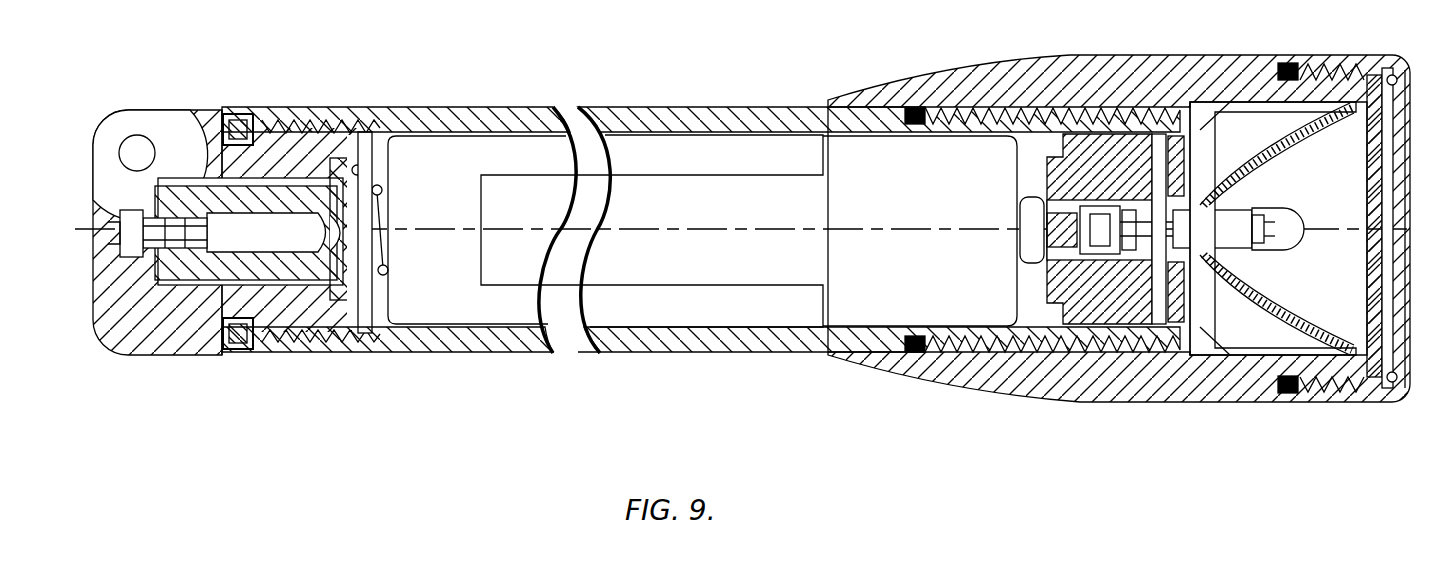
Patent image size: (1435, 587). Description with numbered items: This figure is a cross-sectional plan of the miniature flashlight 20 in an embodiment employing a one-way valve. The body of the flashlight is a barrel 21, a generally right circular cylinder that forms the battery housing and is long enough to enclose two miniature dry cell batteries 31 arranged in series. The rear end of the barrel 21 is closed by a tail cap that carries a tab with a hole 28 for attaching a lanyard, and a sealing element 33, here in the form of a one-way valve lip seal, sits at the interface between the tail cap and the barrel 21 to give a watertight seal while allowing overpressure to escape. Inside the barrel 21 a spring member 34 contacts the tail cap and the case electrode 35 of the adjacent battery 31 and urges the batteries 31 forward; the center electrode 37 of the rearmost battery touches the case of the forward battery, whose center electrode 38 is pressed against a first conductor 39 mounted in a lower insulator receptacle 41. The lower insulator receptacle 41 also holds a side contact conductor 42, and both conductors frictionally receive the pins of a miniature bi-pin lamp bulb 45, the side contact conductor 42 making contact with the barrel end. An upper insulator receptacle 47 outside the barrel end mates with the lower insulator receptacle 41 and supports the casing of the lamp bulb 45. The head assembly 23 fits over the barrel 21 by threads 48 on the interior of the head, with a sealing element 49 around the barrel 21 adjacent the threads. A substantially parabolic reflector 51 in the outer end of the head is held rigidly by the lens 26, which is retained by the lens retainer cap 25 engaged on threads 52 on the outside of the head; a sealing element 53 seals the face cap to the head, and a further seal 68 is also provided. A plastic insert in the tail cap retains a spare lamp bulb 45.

The miniature flashlight 20 is at (668, 380).
The barrel 21 is at (771, 110).
The head assembly 23 is at (1060, 68).
The lens retainer cap 25 is at (1322, 56).
The lens 26 is at (1405, 402).
The hole 28 is at (138, 140).
The miniature dry cell batteries 31 is at (444, 318).
The sealing element 33 is at (238, 116).
The spring member 34 is at (380, 275).
The case electrode 35 is at (380, 130).
The center electrode 37 is at (300, 342).
The center electrode 38 is at (1010, 258).
The first conductor 39 is at (1042, 208).
The lower insulator receptacle 41 is at (1101, 345).
The side contact conductor 42 is at (1141, 333).
The miniature bi-pin lamp bulb 45 is at (337, 233).
The upper insulator receptacle 47 is at (1193, 345).
The threads 48 is at (1140, 122).
The sealing element 49 is at (915, 108).
The parabolic reflector 51 is at (1293, 326).
The threads 52 is at (1297, 396).
The sealing element 53 is at (1288, 62).
The seal 68 is at (1389, 74).